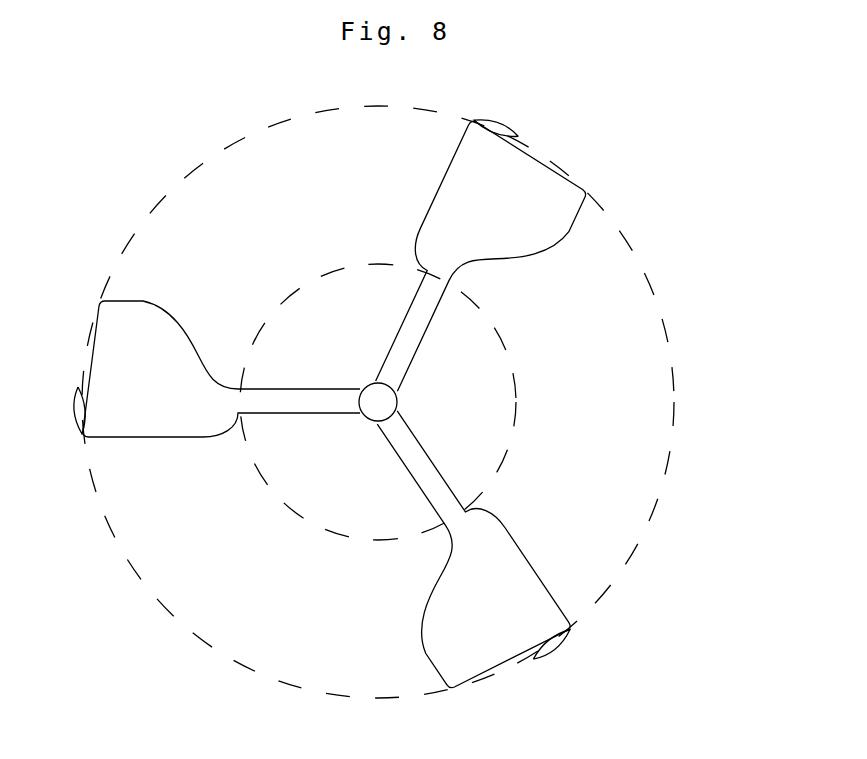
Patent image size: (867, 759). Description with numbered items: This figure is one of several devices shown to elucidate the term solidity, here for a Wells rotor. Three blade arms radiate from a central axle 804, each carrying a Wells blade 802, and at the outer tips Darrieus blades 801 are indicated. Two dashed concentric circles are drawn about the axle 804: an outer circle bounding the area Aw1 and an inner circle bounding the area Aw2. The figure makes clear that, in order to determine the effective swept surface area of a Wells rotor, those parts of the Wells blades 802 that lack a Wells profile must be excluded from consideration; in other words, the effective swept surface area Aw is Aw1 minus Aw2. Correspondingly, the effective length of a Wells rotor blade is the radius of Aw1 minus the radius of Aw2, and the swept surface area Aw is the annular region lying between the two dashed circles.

The effective swept surface area of the Wells rotor Aw is at (431, 387).
The outer swept area Aw1 is at (607, 213).
The inner excluded area Aw2 is at (512, 355).
The Darrieus blade 801 is at (553, 640).
The Wells blade 802 is at (122, 420).
The axle 804 is at (392, 406).